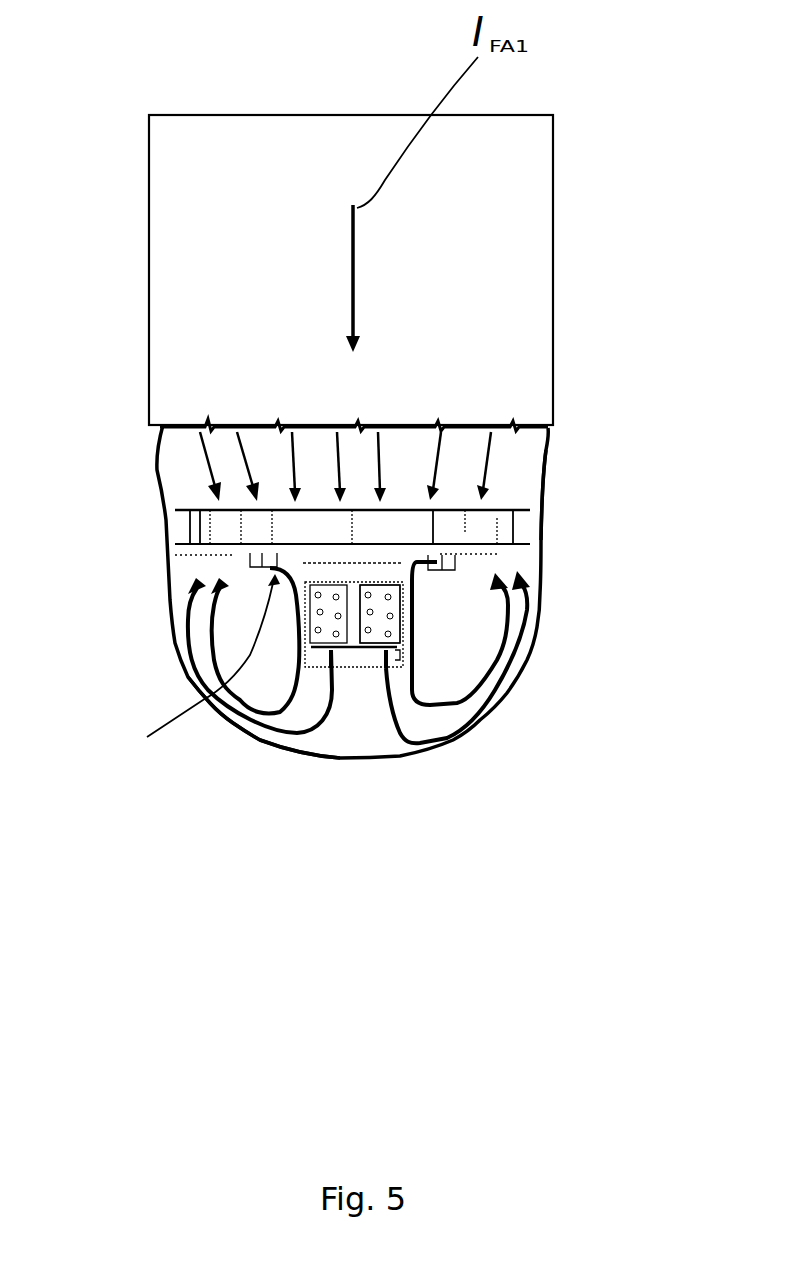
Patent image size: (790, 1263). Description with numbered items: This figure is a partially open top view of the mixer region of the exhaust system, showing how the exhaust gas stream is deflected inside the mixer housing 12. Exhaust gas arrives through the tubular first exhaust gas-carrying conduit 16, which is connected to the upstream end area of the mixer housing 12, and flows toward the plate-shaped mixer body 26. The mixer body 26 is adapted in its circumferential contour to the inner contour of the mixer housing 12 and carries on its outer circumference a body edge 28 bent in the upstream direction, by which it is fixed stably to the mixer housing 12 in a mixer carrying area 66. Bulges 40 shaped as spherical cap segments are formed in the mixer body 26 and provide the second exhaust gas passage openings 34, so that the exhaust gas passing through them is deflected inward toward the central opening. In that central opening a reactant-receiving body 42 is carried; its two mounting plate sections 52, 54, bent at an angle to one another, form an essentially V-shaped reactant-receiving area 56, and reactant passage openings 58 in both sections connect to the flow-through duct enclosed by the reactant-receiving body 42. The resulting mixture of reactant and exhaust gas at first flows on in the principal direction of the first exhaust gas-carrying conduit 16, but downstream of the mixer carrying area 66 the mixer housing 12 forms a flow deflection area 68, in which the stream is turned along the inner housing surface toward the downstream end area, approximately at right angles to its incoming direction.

The mixer housing 12 is at (325, 763).
The first exhaust gas-carrying conduit 16 is at (553, 197).
The mixer body 26 is at (513, 547).
The body edge 28 is at (200, 528).
The second exhaust gas passage openings 34 is at (181, 676).
The bulges 40 is at (250, 568).
The reactant-receiving body 42 is at (362, 668).
The mounting plate section 52 is at (387, 622).
The mounting plate section 54 is at (343, 603).
The reactant-receiving area 56 is at (330, 568).
The reactant passage openings 58 is at (387, 650).
The mixer carrying area 66 is at (547, 513).
The flow deflection area 68 is at (263, 740).